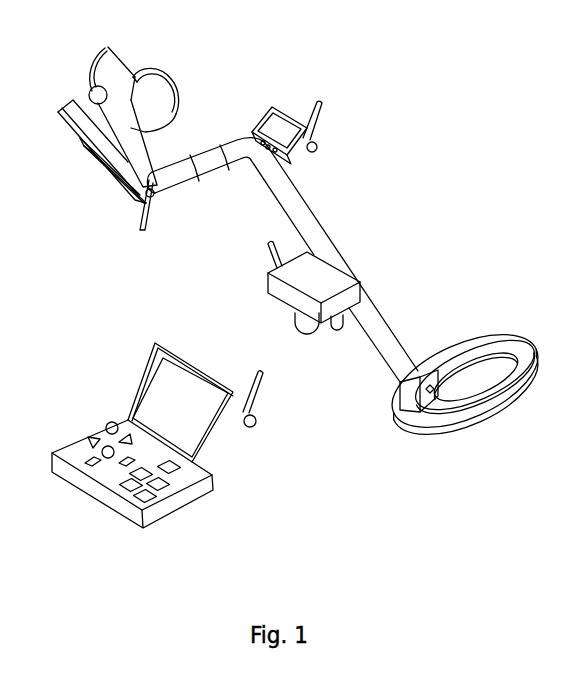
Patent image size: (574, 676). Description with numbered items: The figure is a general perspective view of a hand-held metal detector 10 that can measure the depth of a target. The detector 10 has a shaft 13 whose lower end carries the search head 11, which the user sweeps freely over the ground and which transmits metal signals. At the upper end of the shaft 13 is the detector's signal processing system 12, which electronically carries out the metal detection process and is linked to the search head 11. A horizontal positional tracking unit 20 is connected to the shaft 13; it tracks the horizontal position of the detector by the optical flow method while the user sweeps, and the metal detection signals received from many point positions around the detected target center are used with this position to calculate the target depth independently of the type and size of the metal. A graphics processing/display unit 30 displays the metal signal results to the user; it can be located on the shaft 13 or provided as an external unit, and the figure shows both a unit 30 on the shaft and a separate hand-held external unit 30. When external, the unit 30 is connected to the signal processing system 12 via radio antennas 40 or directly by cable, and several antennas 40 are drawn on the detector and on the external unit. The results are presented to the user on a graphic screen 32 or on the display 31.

The metal detector 10 is at (437, 107).
The search head 11 is at (475, 422).
The signal processing system 12 is at (92, 175).
The shaft 13 is at (320, 223).
The horizontal positional tracking unit 20 is at (282, 291).
The graphics processing/display unit 30 is at (288, 112).
The display 31 is at (278, 135).
The graphic screen 32 is at (173, 398).
The radio antennas 40 is at (140, 222).